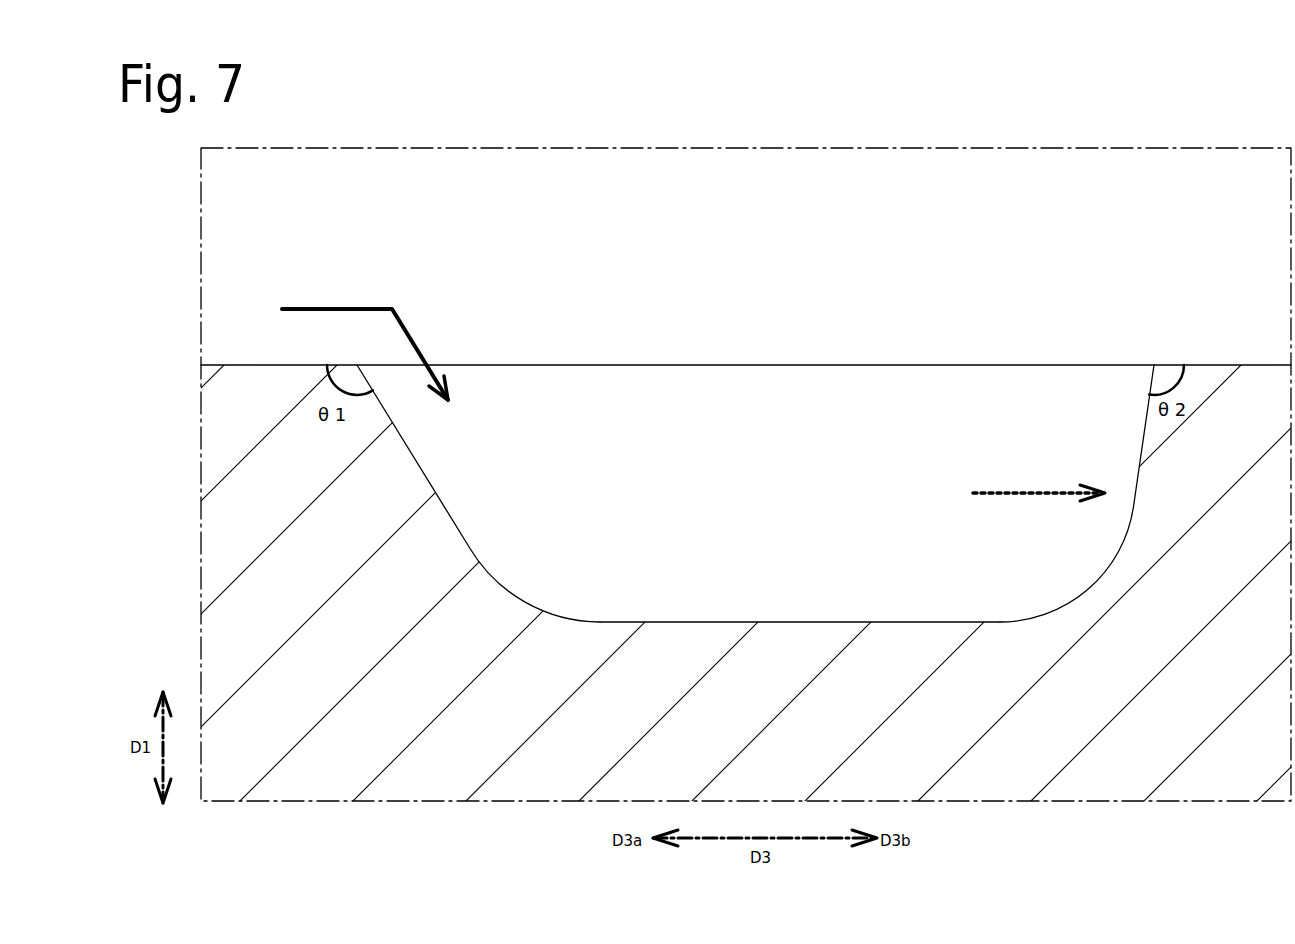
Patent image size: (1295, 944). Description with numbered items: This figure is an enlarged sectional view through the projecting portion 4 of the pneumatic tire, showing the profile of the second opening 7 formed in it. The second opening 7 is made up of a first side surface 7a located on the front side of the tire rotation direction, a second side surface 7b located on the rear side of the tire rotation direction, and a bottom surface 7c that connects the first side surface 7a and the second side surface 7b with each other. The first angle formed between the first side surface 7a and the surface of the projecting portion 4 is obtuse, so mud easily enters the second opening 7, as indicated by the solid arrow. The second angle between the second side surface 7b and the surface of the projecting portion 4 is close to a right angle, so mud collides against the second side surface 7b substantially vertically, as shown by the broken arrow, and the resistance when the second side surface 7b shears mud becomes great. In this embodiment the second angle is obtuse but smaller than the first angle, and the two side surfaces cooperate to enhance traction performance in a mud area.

The projecting portion 4 is at (232, 365).
The second opening 7 is at (755, 448).
The first side surface 7a is at (450, 515).
The second side surface 7b is at (1142, 436).
The bottom surface 7c is at (800, 622).